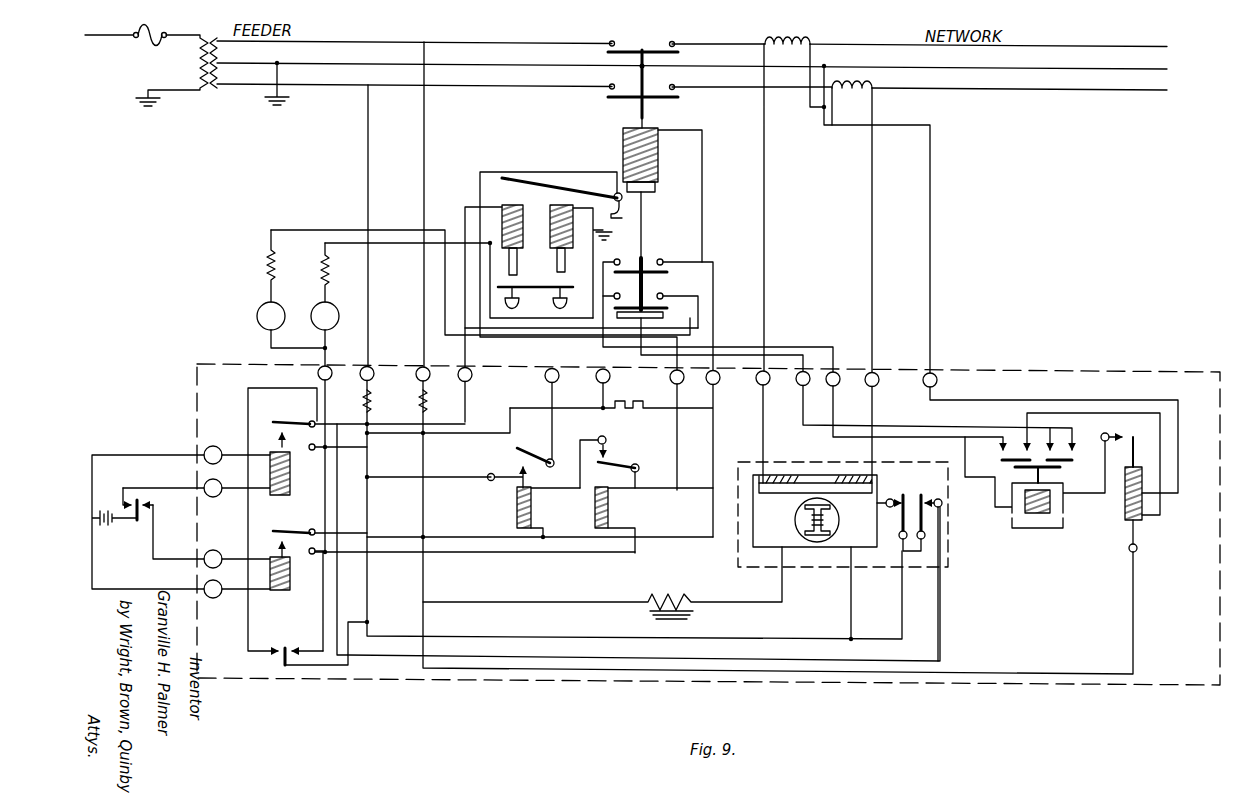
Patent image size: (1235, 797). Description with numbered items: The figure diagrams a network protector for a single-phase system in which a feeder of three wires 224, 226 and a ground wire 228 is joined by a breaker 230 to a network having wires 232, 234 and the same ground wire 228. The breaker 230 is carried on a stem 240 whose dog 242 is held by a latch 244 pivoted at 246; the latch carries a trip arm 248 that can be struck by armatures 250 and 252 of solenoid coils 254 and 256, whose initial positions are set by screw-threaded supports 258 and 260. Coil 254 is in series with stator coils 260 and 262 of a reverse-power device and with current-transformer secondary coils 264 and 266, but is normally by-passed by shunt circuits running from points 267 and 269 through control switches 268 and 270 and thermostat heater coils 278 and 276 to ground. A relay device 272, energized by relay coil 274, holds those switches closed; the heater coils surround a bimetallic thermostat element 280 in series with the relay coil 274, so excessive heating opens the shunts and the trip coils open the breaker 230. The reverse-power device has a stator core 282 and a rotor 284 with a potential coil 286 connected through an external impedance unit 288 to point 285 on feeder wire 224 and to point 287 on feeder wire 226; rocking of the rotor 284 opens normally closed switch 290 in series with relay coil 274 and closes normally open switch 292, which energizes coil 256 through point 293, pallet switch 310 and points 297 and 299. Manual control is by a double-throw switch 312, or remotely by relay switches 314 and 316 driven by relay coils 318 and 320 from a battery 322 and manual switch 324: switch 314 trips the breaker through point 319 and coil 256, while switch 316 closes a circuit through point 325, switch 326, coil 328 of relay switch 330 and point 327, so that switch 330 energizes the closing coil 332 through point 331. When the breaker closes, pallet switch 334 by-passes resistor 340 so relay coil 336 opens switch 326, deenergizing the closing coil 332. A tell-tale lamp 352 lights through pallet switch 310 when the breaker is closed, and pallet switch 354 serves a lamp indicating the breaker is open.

The feeder wire 224 is at (355, 47).
The ground wire 228 is at (350, 66).
The feeder wire 226 is at (344, 87).
The point 285 is at (430, 44).
The point 287 is at (371, 94).
The network wire 232 is at (1127, 27).
The network wire 234 is at (1125, 75).
The breaker 230 is at (638, 72).
The current-transformer secondary coil 264 is at (770, 50).
The current-transformer secondary coil 266 is at (868, 95).
The closing coil 332 is at (624, 130).
The stem 240 is at (645, 215).
The dog 242 is at (643, 240).
The trip arm 248 is at (543, 180).
The pivot 246 is at (615, 190).
The latch 244 is at (625, 212).
The solenoid coil 256 is at (490, 200).
The solenoid coil 254 is at (553, 218).
The armature 252 is at (517, 262).
The armature 250 is at (558, 266).
The screw-threaded support 260 is at (512, 312).
The screw-threaded support 258 is at (560, 312).
The pallet switch 334 is at (665, 262).
The pallet switch 310 is at (665, 296).
The pallet switch 354 is at (668, 315).
The tell-tale lamp 352 is at (257, 316).
The battery 322 is at (95, 513).
The manual double-throw switch 324 is at (140, 498).
The relay coil 318 is at (291, 478).
The relay switch 314 is at (273, 428).
The relay coil 320 is at (284, 591).
The relay switch 316 is at (273, 537).
The manually-operable double-throw switch 312 is at (288, 670).
The point 319 is at (368, 447).
The point 325 is at (368, 535).
The point 331 is at (368, 476).
The point 293 is at (364, 400).
The point 299 is at (424, 440).
The point 327 is at (424, 505).
The relay switch 330 is at (516, 450).
The point 297 is at (603, 407).
The resistor 340 is at (640, 401).
The switch 326 is at (627, 464).
The coil 328 is at (517, 506).
The relay coil 336 is at (595, 506).
The external impedance unit 288 is at (672, 598).
The stator core 282 is at (760, 518).
The rotor 284 is at (832, 498).
The stator coil 262 is at (850, 480).
The point 269 is at (803, 424).
The point 267 is at (835, 437).
The potential coil 286 is at (814, 545).
The normally closed switch 290 is at (904, 545).
The normally open switch 292 is at (926, 530).
The control switch 270 is at (1062, 413).
The thermostat heater coil 276 is at (1160, 486).
The control switch 268 is at (1020, 443).
The relay device 272 is at (1049, 526).
The relay coil 274 is at (1030, 522).
The bimetallic thermostat element 280 is at (1137, 452).
The thermostat heat coil 278 is at (1125, 490).